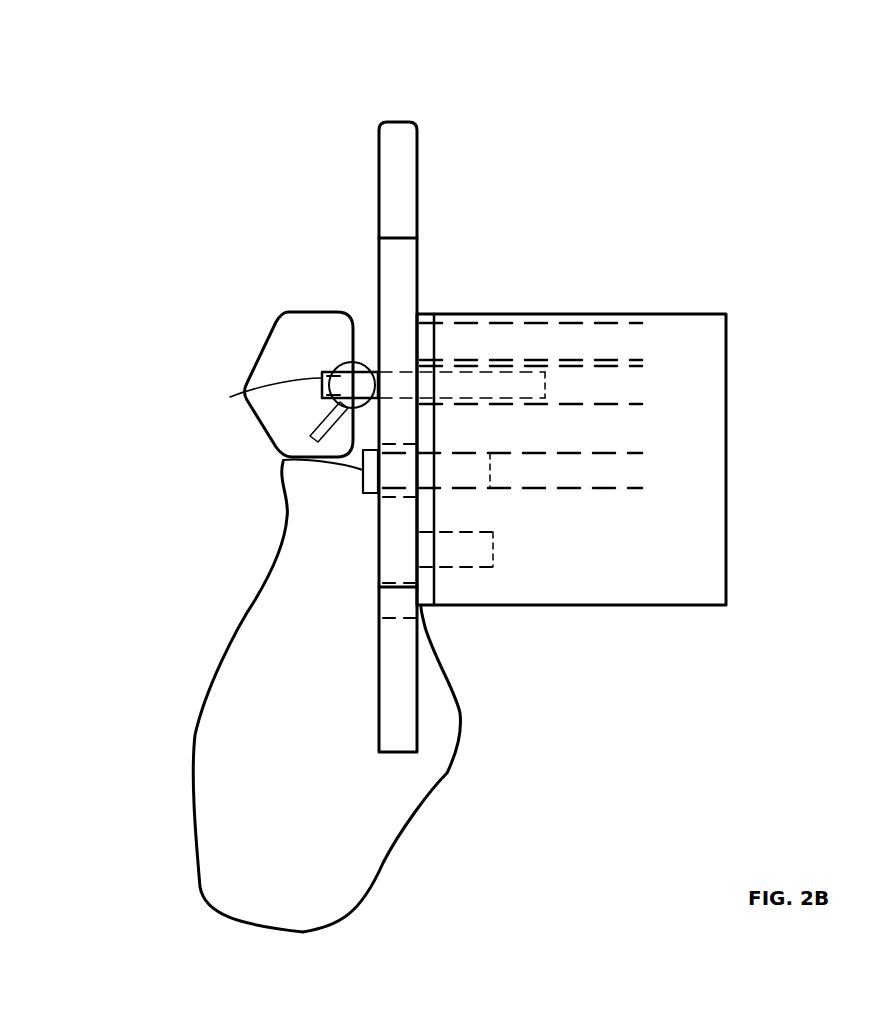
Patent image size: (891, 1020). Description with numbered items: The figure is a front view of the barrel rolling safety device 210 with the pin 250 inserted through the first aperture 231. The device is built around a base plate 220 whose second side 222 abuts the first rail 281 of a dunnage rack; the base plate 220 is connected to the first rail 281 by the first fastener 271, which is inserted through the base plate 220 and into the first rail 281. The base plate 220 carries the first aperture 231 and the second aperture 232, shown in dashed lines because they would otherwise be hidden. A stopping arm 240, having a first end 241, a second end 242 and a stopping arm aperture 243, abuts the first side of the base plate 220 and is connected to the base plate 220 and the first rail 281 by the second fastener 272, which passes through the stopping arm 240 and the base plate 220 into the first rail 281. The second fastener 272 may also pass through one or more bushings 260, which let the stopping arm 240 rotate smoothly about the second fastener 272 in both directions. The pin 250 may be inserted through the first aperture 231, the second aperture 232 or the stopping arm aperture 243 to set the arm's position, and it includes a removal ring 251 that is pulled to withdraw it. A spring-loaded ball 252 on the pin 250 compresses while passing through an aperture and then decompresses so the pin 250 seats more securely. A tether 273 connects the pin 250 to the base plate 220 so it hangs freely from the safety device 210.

The barrel rolling safety device 210 is at (212, 30).
The stopping arm 240 is at (292, 197).
The first end 241 is at (400, 122).
The second end 242 is at (397, 752).
The stopping arm aperture 243 is at (393, 623).
The base plate 220 is at (424, 313).
The first rail 281 is at (712, 605).
The second aperture 232 is at (630, 323).
The first aperture 231 is at (630, 368).
The second side 222 is at (437, 588).
The first fastener 271 is at (493, 538).
The spring-loaded ball 252 is at (548, 385).
The bushings 260 is at (390, 503).
The second fastener 272 is at (363, 470).
The tether 273 is at (195, 735).
The removal ring 251 is at (250, 432).
The pin 250 is at (322, 380).